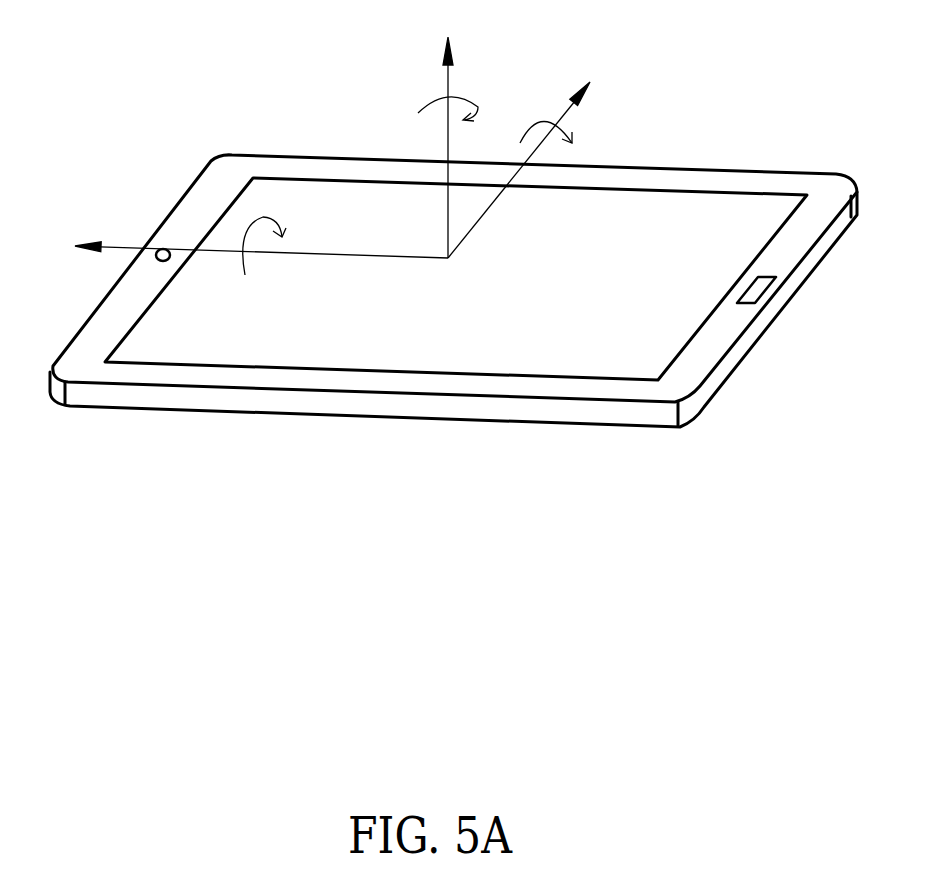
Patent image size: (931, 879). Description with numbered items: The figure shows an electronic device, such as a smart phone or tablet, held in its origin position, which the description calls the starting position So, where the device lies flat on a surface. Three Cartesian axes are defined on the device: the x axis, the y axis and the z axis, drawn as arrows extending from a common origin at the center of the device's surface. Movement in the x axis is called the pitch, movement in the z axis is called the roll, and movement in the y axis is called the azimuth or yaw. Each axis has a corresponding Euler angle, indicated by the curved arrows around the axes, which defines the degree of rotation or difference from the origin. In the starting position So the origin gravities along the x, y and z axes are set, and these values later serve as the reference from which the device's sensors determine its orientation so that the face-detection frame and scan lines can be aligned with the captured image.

The starting position So is at (453, 313).
The x axis x is at (528, 160).
The y axis y is at (251, 245).
The z axis z is at (447, 132).